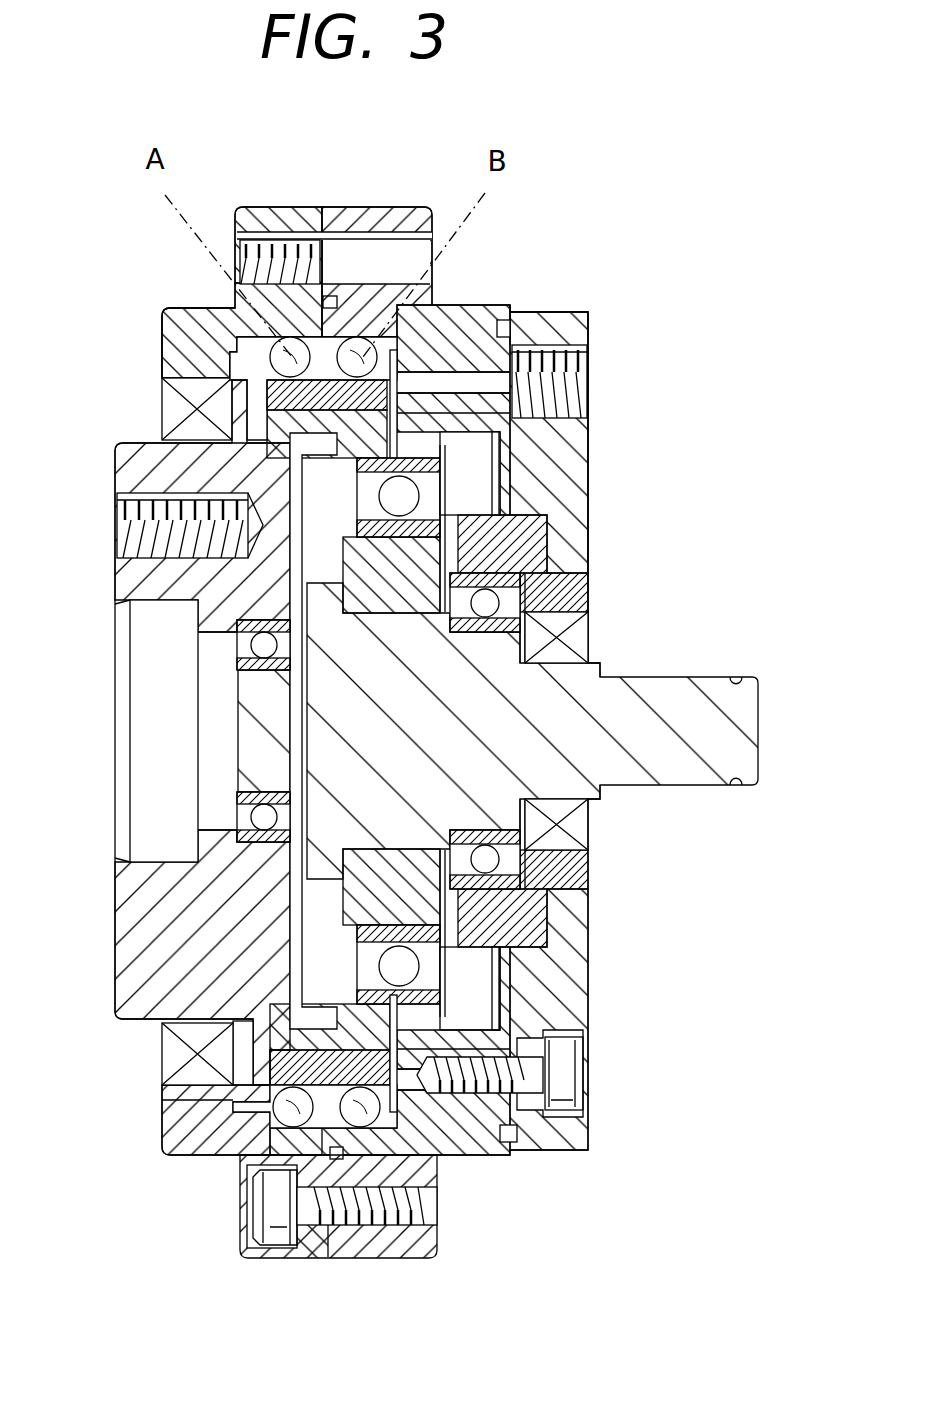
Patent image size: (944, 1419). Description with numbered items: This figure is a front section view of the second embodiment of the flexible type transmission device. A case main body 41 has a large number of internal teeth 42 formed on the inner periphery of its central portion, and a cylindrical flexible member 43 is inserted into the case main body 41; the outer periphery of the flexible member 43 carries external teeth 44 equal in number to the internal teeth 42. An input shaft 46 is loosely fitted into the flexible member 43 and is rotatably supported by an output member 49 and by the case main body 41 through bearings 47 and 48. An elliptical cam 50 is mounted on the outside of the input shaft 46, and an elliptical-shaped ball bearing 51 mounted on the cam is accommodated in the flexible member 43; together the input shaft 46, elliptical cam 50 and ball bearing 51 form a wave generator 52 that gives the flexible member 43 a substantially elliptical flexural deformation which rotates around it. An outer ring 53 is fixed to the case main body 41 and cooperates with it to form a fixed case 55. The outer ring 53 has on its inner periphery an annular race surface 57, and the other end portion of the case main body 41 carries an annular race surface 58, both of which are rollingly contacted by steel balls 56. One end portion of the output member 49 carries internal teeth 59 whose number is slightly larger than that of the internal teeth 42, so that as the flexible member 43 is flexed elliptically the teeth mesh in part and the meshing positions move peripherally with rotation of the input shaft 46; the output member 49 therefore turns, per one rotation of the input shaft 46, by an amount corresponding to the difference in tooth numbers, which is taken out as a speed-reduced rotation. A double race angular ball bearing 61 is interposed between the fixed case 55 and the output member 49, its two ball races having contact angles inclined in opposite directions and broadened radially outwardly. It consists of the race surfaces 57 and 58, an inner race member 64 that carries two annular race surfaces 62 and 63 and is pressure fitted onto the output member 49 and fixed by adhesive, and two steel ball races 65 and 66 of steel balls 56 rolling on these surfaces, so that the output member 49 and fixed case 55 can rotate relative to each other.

The case main body 41 is at (460, 308).
The internal teeth 42 is at (450, 472).
The flexible member 43 is at (470, 458).
The external teeth 44 is at (510, 410).
The input shaft 46 is at (670, 687).
The bearing 47 is at (242, 645).
The bearing 48 is at (508, 596).
The output member 49 is at (128, 917).
The elliptical cam 50 is at (392, 605).
The ball bearing 51 is at (421, 497).
The wave generator 52 is at (598, 643).
The outer ring 53 is at (178, 312).
The fixed case 55 is at (322, 207).
The steel balls 56 is at (273, 345).
The annular race surface 57 is at (280, 372).
The annular race surface 58 is at (447, 322).
The internal teeth 59 is at (336, 455).
The double race angular ball bearing 61 is at (392, 1112).
The annular race surface 62 is at (273, 1100).
The annular race surface 63 is at (375, 1122).
The inner race member 64 is at (300, 1065).
The steel ball race 65 is at (273, 1126).
The steel ball race 66 is at (365, 1165).